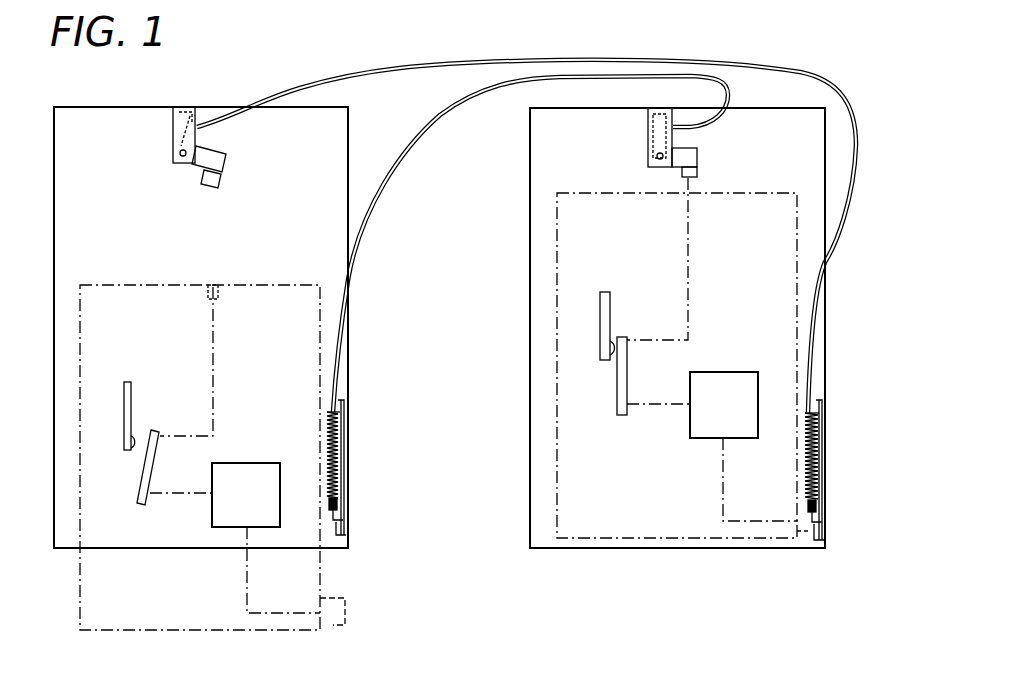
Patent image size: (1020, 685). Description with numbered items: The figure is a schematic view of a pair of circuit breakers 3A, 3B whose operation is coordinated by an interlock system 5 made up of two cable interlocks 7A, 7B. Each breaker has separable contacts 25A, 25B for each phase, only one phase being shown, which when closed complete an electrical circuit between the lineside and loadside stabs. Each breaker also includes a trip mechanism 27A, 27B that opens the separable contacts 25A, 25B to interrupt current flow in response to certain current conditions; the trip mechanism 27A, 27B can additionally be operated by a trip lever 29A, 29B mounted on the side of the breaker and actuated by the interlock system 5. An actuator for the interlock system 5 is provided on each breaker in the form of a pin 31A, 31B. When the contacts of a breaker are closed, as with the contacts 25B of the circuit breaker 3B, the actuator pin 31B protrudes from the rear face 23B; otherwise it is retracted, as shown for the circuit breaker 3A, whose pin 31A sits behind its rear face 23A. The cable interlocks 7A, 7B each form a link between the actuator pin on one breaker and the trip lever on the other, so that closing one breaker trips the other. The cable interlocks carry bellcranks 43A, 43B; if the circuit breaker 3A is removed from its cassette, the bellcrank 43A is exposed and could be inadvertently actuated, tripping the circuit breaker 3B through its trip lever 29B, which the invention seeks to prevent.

The interlock system 5 is at (754, 46).
The circuit breaker 3A is at (97, 590).
The circuit breaker 3B is at (560, 501).
The cable interlock 7A is at (447, 62).
The cable interlock 7B is at (425, 135).
The rear face 23A is at (125, 283).
The rear face 23B is at (599, 192).
The separable contacts 25A is at (134, 436).
The separable contacts 25B is at (612, 342).
The trip mechanism 27A is at (238, 463).
The trip mechanism 27B is at (715, 372).
The trip lever 29A is at (333, 626).
The trip lever 29B is at (804, 540).
The actuator pin 31A is at (218, 303).
The actuator pin 31B is at (692, 180).
The bellcrank 43A is at (244, 149).
The bellcrank 43B is at (718, 148).